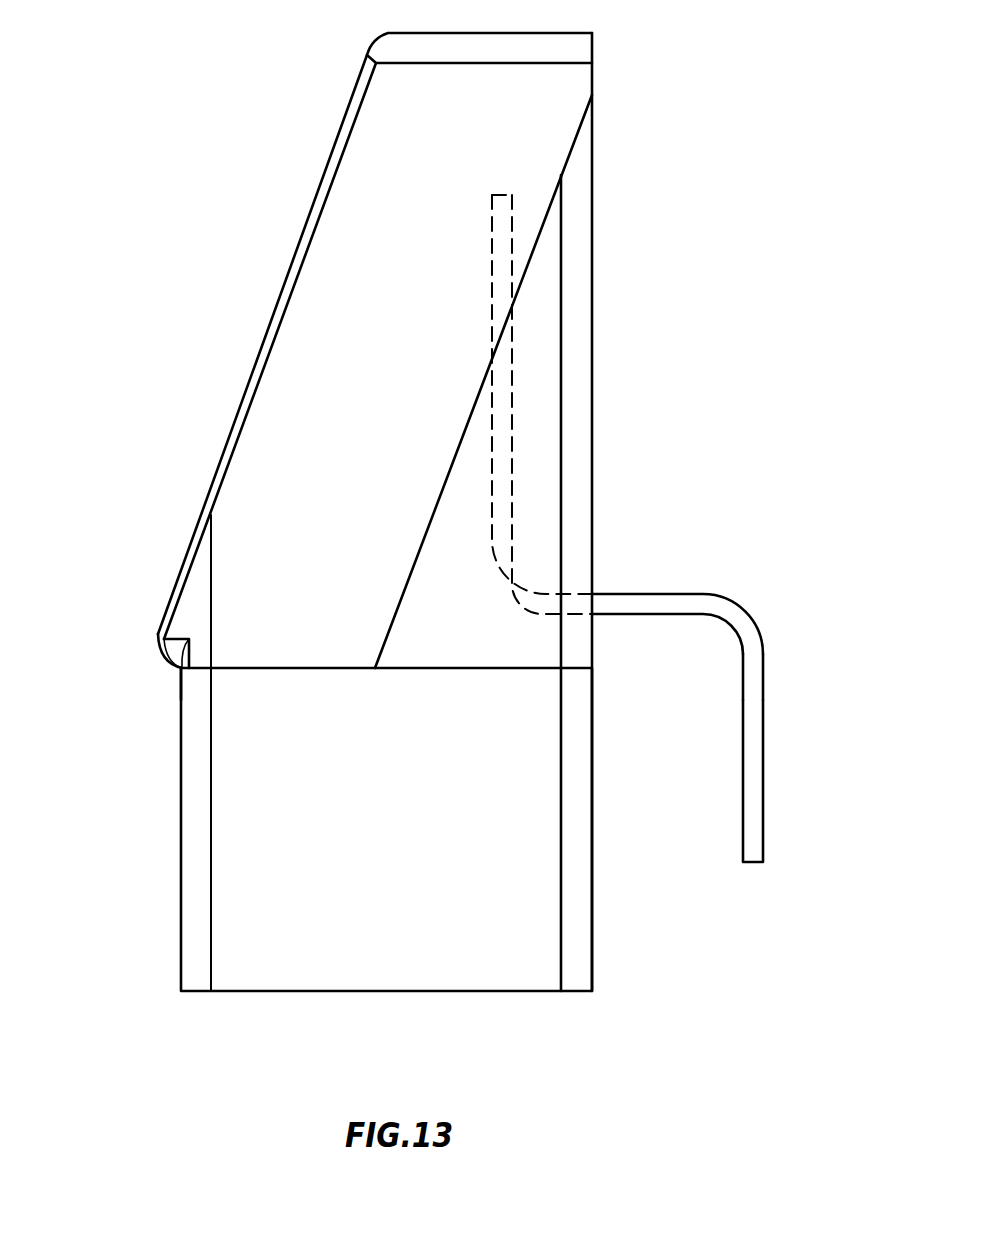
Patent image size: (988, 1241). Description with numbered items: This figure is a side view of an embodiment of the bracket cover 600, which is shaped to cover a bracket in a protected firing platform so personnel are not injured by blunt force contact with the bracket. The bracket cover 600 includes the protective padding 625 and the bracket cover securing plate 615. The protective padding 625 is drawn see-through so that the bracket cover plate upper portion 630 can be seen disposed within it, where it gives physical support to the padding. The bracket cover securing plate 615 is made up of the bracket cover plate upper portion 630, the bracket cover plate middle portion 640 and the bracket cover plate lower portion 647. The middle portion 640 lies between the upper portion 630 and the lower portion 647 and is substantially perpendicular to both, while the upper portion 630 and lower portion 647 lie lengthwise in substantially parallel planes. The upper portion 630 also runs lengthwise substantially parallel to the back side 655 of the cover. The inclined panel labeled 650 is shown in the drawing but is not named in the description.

The bracket cover 600 is at (477, 991).
The inclined panel 650 is at (343, 290).
The back side 655 is at (592, 222).
The protective padding 625 is at (278, 578).
The bracket cover plate upper portion 630 is at (512, 360).
The bracket cover plate middle portion 640 is at (655, 594).
The bracket cover plate lower portion 647 is at (763, 675).
The bracket cover securing plate 615 is at (763, 772).